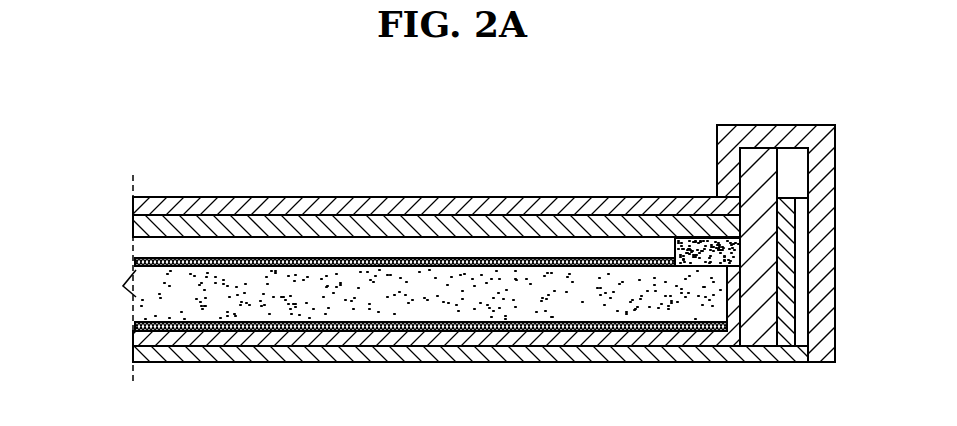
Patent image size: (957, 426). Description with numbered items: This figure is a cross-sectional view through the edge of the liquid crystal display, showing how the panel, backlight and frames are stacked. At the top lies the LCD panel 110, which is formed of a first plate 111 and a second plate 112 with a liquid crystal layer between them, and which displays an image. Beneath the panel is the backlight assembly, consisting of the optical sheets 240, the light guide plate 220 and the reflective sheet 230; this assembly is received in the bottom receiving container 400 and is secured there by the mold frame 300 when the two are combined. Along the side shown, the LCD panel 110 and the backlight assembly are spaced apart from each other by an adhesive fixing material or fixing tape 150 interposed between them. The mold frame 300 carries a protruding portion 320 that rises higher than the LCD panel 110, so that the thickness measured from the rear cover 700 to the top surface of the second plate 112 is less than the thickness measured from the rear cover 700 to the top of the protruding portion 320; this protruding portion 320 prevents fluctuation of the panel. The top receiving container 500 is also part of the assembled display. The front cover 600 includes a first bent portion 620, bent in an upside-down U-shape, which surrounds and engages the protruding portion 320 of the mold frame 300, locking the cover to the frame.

The LCD panel 110 is at (428, 160).
The first plate 111 is at (199, 212).
The second plate 112 is at (253, 228).
The fixing tape 150 is at (690, 242).
The optical sheets 240 is at (135, 262).
The light guide plate 220 is at (135, 307).
The reflective sheet 230 is at (137, 327).
The bottom receiving container 400 is at (308, 342).
The rear cover 700 is at (237, 353).
The mold frame 300 is at (746, 242).
The protruding portion 320 is at (755, 165).
The top receiving container 500 is at (782, 340).
The front cover 600 is at (718, 242).
The first bent portion 620 is at (805, 133).